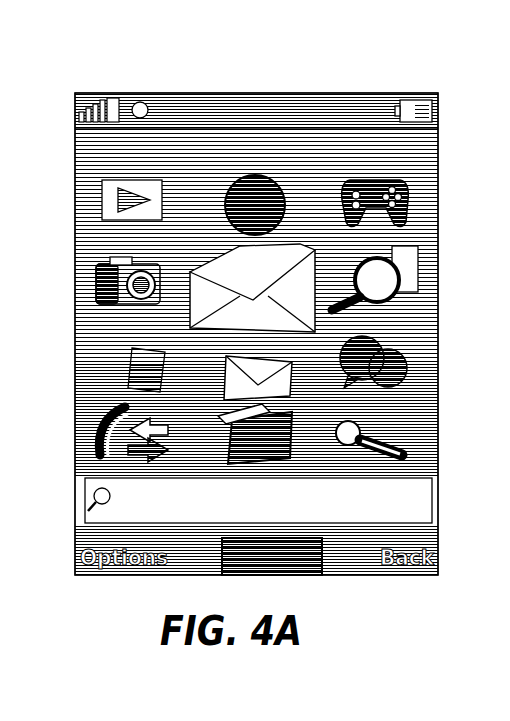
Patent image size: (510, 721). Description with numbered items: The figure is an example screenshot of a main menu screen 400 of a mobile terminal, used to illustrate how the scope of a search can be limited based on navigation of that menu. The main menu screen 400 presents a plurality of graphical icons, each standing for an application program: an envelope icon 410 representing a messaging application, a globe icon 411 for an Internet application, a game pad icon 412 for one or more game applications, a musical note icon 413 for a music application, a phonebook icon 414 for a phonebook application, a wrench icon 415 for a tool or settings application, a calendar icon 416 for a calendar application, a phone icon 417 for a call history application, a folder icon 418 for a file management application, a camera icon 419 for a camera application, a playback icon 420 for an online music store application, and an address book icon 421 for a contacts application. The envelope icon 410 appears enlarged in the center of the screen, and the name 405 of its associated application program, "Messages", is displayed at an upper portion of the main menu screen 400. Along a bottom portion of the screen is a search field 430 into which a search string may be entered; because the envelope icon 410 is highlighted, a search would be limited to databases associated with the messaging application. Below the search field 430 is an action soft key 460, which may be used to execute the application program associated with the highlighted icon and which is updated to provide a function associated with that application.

The main menu screen 400 is at (355, 116).
The name of the application program 405 is at (275, 128).
The envelope icon 410 is at (213, 268).
The globe icon 411 is at (242, 208).
The game pad icon 412 is at (407, 197).
The musical note icon 413 is at (413, 265).
The phonebook icon 414 is at (412, 358).
The wrench icon 415 is at (410, 453).
The calendar icon 416 is at (240, 456).
The phone icon 417 is at (98, 455).
The folder icon 418 is at (100, 362).
The camera icon 419 is at (97, 283).
The playback icon 420 is at (100, 207).
The address book icon 421 is at (243, 377).
The search field 430 is at (414, 500).
The action soft key 460 is at (322, 575).